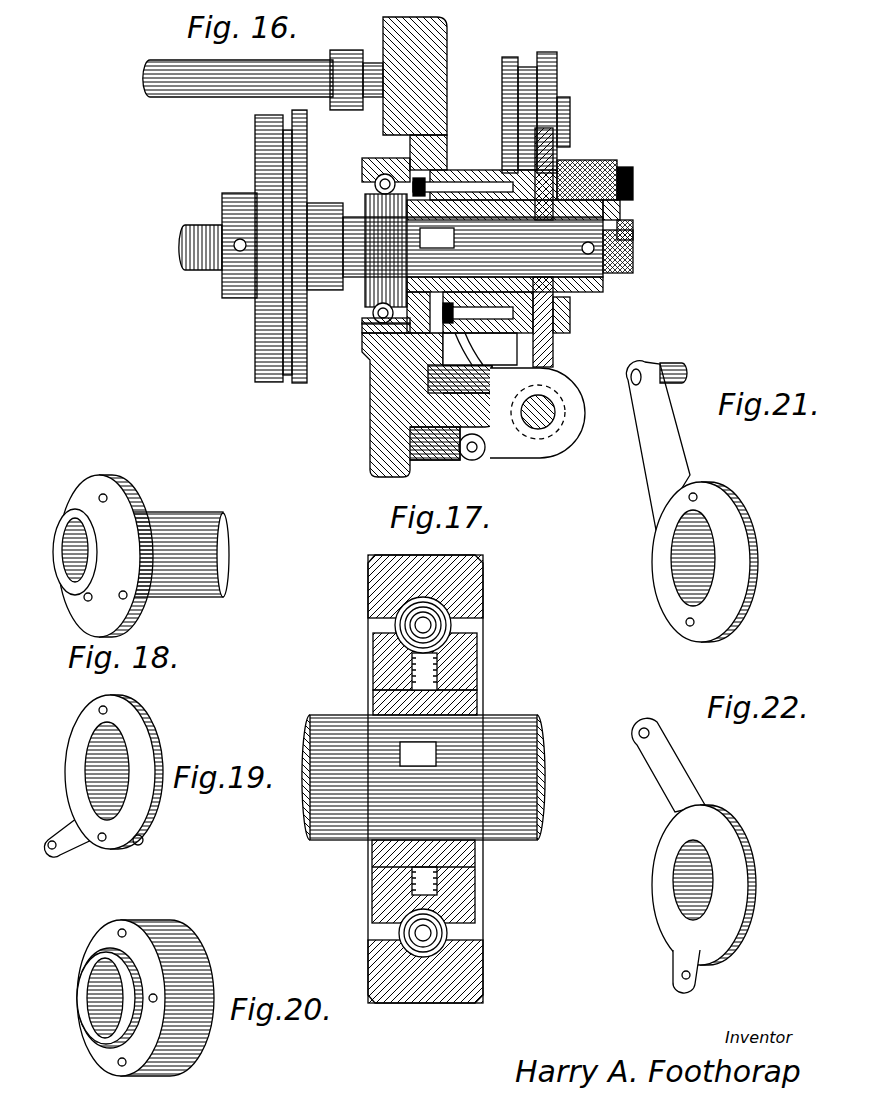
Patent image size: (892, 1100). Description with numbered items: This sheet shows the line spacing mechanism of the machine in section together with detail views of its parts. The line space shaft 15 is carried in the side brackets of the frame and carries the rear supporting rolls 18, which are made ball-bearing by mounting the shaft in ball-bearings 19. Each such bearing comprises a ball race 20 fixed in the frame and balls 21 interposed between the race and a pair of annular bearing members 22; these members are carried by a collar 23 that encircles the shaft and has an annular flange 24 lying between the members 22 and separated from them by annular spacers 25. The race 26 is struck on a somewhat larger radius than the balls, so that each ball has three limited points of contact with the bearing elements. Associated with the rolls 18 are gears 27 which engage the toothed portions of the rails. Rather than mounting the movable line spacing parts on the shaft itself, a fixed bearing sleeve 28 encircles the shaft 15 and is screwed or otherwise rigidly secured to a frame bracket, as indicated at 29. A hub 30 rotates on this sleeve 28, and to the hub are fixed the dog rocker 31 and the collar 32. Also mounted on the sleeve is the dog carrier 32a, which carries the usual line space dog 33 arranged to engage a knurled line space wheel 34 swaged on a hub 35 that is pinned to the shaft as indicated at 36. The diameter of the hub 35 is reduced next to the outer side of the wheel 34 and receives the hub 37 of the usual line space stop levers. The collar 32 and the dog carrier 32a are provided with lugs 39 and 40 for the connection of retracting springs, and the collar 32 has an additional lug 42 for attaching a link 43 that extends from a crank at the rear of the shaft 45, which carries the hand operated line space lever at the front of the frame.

In FIG. 16, the line space shaft 15 is at (183, 253).
In FIG. 17, the line space shaft 15 is at (423, 777).
In FIG. 16, the rear supporting rolls 18 is at (266, 380).
In FIG. 16, the ball-bearings 19 is at (377, 180).
In FIG. 17, the ball race 20 is at (483, 575).
In FIG. 16, the balls 21 is at (368, 195).
In FIG. 17, the balls 21 is at (447, 625).
In FIG. 16, the annular bearing members 22 is at (366, 324).
In FIG. 17, the annular bearing members 22 is at (465, 673).
In FIG. 17, the collar 23 is at (463, 703).
In FIG. 16, the annular flange 24 is at (368, 335).
In FIG. 17, the annular flange 24 is at (423, 882).
In FIG. 16, the annular spacers 25 is at (372, 305).
In FIG. 17, the annular spacers 25 is at (442, 665).
In FIG. 16, the race 26 is at (372, 162).
In FIG. 17, the race 26 is at (400, 610).
In FIG. 16, the gears 27 is at (300, 385).
In FIG. 16, the fixed bearing sleeve 28 is at (473, 247).
In FIG. 18, the fixed bearing sleeve 28 is at (181, 513).
In FIG. 16, the screw fastening 29 is at (425, 188).
In FIG. 16, the hub 30 is at (487, 167).
In FIG. 20, the hub 30 is at (188, 938).
In FIG. 16, the dog rocker 31 is at (508, 97).
In FIG. 21, the dog rocker 31 is at (652, 452).
In FIG. 16, the collar 32 is at (440, 187).
In FIG. 16, the dog carrier 32a is at (573, 167).
In FIG. 22, the dog carrier 32a is at (658, 880).
In FIG. 16, the line space dog 33 is at (557, 58).
In FIG. 16, the line space wheel 34 is at (553, 355).
In FIG. 16, the hub 35 is at (620, 207).
In FIG. 16, the pin 36 is at (607, 288).
In FIG. 16, the hub of the line space stop levers 37 is at (570, 328).
In FIG. 19, the lug 39 is at (152, 852).
In FIG. 22, the lug 40 is at (690, 986).
In FIG. 19, the lug 42 is at (55, 850).
In FIG. 16, the link 43 is at (480, 358).
In FIG. 16, the shaft 45 is at (556, 412).